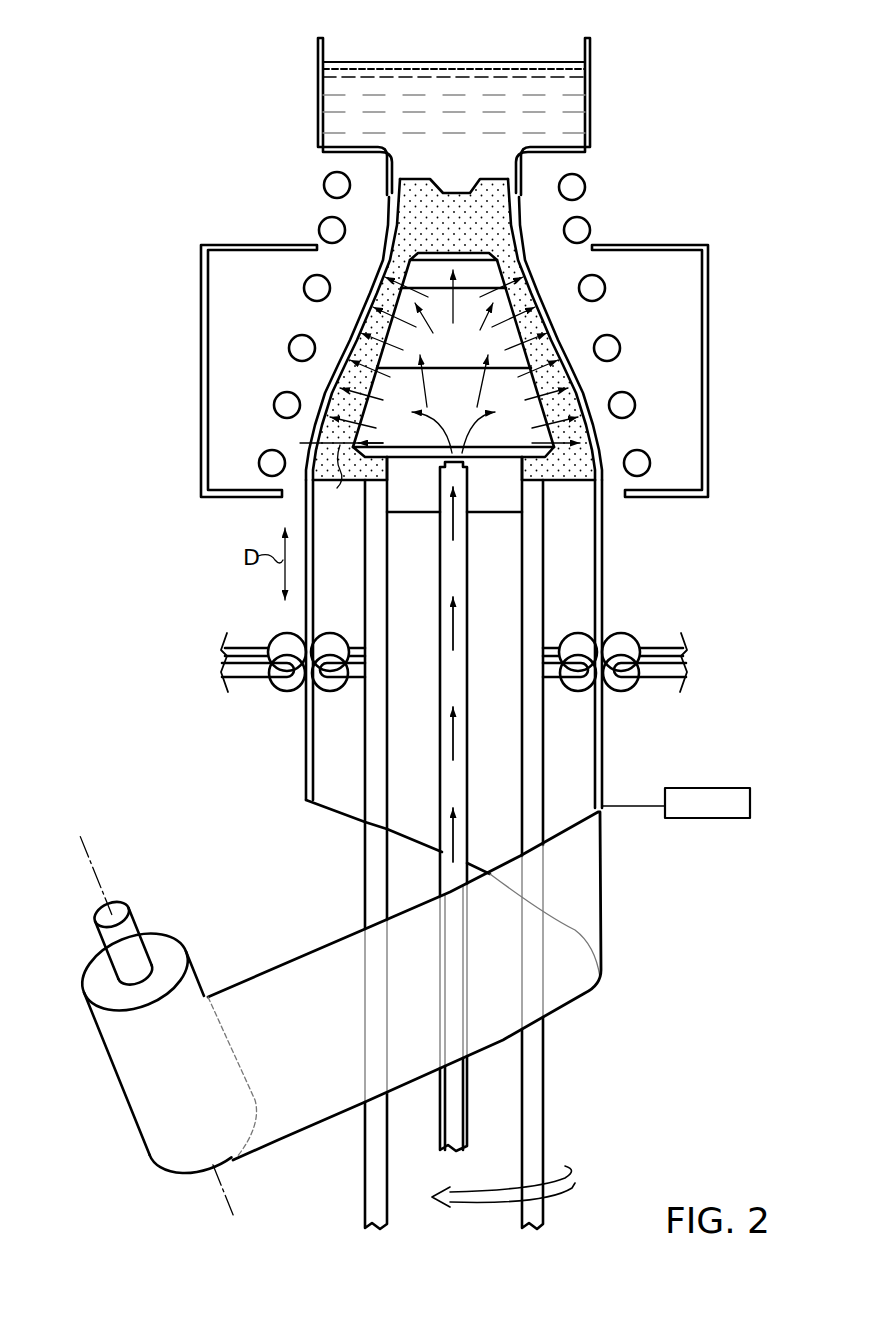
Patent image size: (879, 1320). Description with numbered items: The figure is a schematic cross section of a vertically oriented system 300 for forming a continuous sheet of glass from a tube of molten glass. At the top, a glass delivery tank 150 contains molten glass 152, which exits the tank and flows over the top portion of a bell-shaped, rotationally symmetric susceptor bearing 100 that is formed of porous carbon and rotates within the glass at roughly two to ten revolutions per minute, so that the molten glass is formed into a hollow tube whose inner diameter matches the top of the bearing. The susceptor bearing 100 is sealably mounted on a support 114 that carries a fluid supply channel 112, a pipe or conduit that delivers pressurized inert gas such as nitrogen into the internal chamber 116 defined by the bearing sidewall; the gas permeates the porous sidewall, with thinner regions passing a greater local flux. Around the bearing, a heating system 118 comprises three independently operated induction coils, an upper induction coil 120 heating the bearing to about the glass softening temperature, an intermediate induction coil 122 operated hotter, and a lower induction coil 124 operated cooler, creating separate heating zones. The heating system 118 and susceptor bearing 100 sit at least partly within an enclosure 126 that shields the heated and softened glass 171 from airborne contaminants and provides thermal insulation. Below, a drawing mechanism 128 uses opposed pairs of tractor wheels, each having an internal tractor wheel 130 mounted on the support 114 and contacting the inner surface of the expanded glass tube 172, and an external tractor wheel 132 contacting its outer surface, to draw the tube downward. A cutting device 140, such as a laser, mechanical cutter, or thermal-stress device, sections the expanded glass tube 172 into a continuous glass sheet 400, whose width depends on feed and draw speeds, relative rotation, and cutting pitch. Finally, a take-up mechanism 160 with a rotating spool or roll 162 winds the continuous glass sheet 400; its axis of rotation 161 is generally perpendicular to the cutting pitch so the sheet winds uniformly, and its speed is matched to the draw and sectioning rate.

The susceptor bearing 100 is at (388, 223).
The fluid supply channel 112 is at (468, 745).
The support 114 is at (544, 1100).
The internal chamber 116 is at (380, 385).
The heating system 118 is at (645, 152).
The upper induction coil 120 is at (582, 167).
The intermediate induction coil 122 is at (598, 272).
The lower induction coil 124 is at (628, 383).
The enclosure 126 is at (201, 282).
The drawing mechanism 128 is at (695, 705).
The internal tractor wheel 130 is at (330, 693).
The external tractor wheel 132 is at (284, 693).
The cutting device 140 is at (745, 788).
The glass delivery tank 150 is at (590, 47).
The molten glass 152 is at (470, 62).
The take-up mechanism 160 is at (166, 905).
The axis of rotation 161 is at (84, 850).
The spool or roll 162 is at (94, 962).
The heated and softened glass 171 is at (384, 270).
The expanded glass tube 172 is at (601, 560).
The system 300 is at (624, 97).
The continuous glass sheet 400 is at (298, 946).